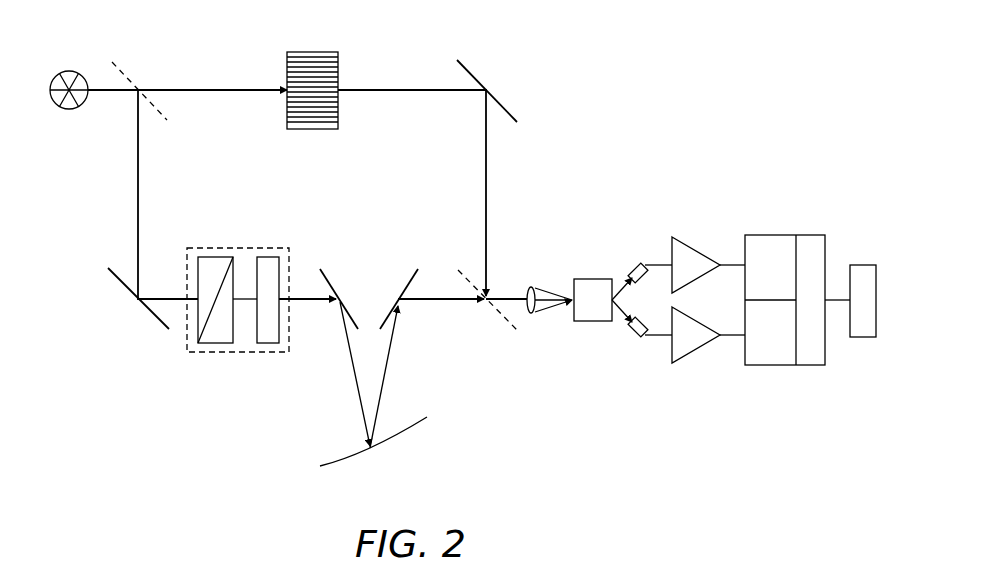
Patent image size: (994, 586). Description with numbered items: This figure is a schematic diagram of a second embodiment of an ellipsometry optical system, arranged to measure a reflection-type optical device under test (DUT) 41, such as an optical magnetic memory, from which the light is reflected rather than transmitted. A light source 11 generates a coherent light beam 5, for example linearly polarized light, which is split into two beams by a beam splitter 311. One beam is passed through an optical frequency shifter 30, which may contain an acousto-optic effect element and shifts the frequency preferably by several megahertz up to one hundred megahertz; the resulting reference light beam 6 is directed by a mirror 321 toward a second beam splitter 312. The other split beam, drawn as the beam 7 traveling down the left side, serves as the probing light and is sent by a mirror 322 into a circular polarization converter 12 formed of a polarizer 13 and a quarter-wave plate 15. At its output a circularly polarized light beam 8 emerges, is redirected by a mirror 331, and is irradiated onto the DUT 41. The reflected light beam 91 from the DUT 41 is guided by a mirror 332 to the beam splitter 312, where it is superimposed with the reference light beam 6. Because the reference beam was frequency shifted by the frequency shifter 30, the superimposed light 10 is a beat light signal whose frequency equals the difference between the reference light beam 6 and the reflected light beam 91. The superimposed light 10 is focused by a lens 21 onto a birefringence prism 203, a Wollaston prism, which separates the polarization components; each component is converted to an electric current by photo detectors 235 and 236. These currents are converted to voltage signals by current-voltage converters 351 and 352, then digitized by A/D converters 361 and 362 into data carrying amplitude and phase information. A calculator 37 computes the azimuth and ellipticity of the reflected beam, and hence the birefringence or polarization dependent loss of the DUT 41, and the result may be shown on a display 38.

The light source 11 is at (77, 70).
The light beam 5 is at (108, 97).
The beam splitter 311 is at (116, 62).
The reference beam 7 is at (138, 190).
The optical frequency shifter 30 is at (318, 52).
The reference light beam 6 is at (407, 90).
The mirror 321 is at (465, 62).
The mirror 322 is at (115, 284).
The circular polarization converter 12 is at (236, 248).
The polarizer 13 is at (213, 343).
The λ/4 plate 15 is at (270, 343).
The circularly polarized light beam 8 is at (317, 299).
The mirror 331 is at (332, 283).
The mirror 332 is at (405, 275).
The optical device under test 41 is at (335, 464).
The reflected light beam 91 is at (440, 299).
The beam splitter 312 is at (497, 318).
The superimposed light 10 is at (503, 300).
The lens 21 is at (528, 315).
The birefringence prism 203 is at (605, 279).
The photo detector 235 is at (635, 262).
The photo detector 236 is at (636, 333).
The current-voltage converter 351 is at (700, 220).
The current-voltage converter 352 is at (703, 363).
The A/D converter 361 is at (780, 235).
The A/D converter 362 is at (762, 365).
The calculator 37 is at (803, 235).
The display 38 is at (857, 265).